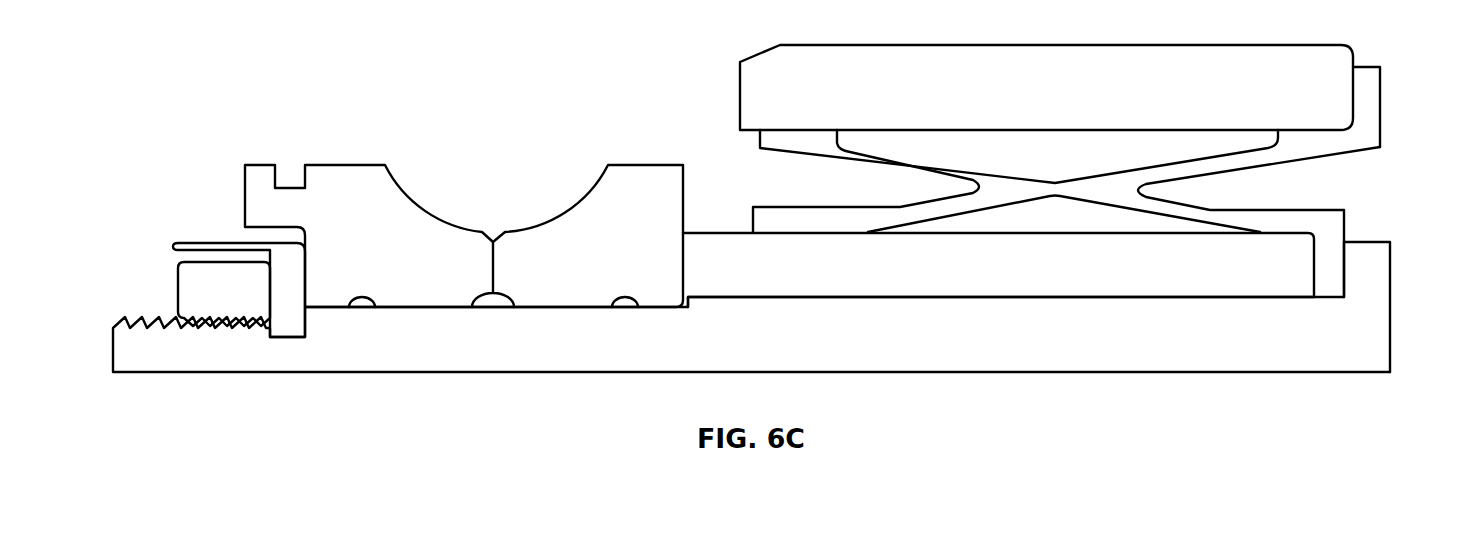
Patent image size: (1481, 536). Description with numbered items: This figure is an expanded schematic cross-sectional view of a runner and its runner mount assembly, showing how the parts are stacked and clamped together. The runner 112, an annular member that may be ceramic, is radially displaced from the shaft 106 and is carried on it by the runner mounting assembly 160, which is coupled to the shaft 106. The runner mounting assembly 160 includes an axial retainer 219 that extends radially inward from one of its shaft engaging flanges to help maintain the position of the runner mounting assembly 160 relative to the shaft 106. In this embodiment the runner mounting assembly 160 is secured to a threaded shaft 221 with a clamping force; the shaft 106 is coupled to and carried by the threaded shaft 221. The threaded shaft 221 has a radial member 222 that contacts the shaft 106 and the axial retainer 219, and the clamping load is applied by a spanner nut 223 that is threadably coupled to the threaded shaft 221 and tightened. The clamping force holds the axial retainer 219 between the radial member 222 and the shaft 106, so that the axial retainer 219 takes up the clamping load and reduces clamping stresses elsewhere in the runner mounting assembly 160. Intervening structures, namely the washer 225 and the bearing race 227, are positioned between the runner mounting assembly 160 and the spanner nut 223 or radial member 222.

The shaft 106 is at (1102, 282).
The runner 112 is at (1068, 100).
The runner mounting assembly 160 is at (1383, 181).
The axial retainer 219 is at (1327, 275).
The threaded shaft 221 is at (515, 353).
The radial member 222 is at (1377, 267).
The spanner nut 223 is at (190, 293).
The washer 225 is at (228, 258).
The bearing race 227 is at (643, 178).